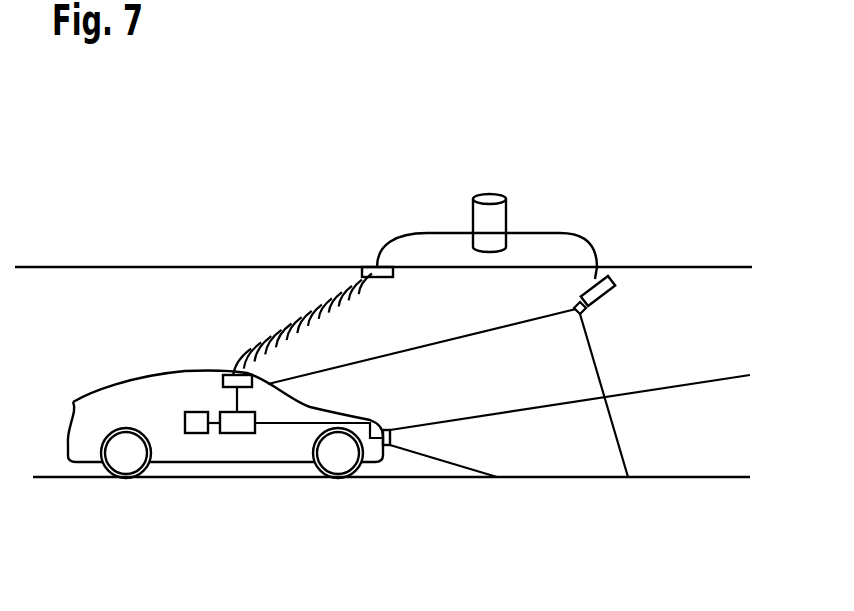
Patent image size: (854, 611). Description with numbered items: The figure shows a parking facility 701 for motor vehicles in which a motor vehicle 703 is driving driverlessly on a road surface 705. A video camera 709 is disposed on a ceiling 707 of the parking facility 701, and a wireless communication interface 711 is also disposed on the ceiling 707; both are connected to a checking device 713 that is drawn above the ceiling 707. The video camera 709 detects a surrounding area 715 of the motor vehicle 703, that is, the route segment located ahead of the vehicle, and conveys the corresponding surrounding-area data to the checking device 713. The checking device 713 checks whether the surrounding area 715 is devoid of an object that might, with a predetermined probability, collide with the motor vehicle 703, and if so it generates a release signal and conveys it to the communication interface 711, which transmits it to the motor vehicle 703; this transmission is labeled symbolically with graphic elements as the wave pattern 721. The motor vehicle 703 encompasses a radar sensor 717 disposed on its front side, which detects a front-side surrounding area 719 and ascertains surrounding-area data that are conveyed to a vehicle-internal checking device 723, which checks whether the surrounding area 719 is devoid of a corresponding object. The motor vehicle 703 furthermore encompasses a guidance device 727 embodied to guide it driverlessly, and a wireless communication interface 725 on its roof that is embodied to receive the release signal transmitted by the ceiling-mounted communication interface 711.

The parking facility 701 is at (720, 356).
The motor vehicle 703 is at (107, 393).
The road surface 705 is at (678, 477).
The ceiling 707 is at (657, 267).
The video camera 709 is at (603, 298).
The wireless communication interface 711 is at (365, 267).
The checking device 713 is at (487, 197).
The surrounding area 715 is at (542, 366).
The radar sensor 717 is at (388, 447).
The front-side surrounding area 719 is at (547, 450).
The transmission of the release signal 721 is at (277, 328).
The checking device 723 is at (237, 433).
The wireless communication interface 725 is at (237, 375).
The guidance device 727 is at (195, 427).